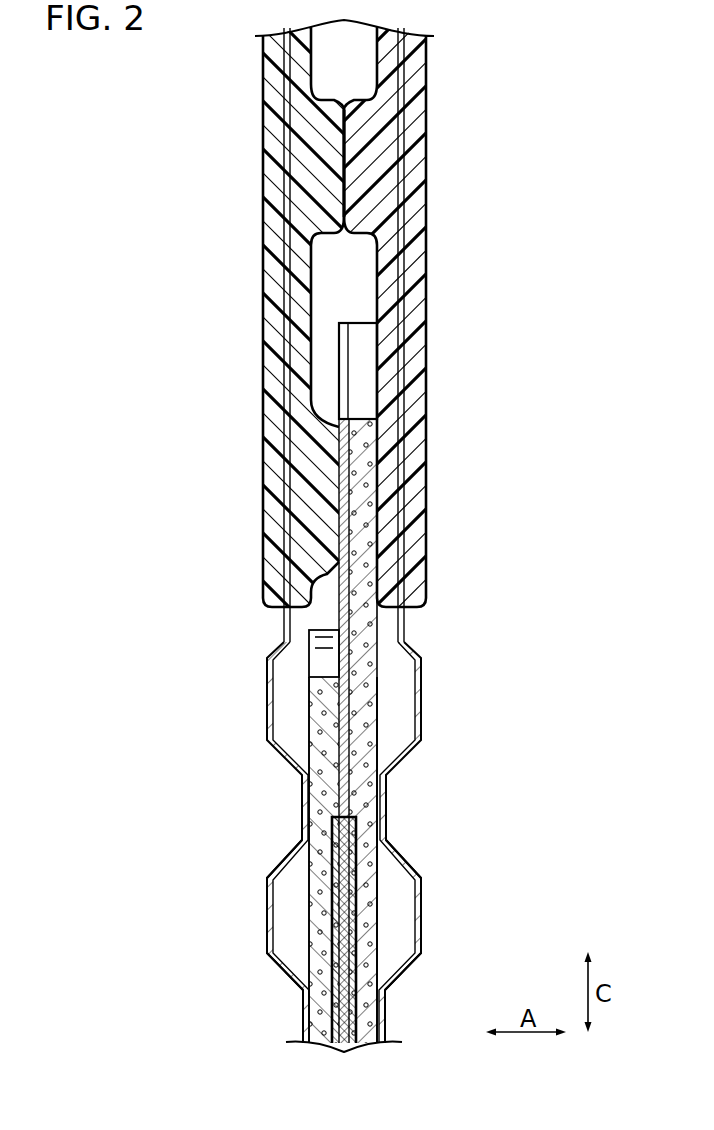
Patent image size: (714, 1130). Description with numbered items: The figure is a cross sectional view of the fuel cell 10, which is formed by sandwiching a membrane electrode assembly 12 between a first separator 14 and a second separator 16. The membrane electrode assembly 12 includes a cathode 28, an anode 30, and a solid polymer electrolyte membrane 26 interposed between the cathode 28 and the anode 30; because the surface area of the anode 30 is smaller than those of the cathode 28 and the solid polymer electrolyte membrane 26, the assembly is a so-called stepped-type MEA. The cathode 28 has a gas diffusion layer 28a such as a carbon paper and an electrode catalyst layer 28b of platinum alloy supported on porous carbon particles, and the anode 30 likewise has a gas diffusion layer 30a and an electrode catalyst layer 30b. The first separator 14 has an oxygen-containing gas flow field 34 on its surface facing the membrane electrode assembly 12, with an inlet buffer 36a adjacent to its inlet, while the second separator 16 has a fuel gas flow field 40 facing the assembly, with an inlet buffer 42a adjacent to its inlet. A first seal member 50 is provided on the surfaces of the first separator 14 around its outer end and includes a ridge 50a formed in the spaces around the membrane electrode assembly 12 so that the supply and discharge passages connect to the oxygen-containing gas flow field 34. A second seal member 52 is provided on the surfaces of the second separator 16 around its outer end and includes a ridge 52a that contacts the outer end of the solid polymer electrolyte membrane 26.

The fuel cell 10 is at (145, 93).
The membrane electrode assembly 12 is at (384, 679).
The first separator 14 is at (430, 179).
The second separator 16 is at (258, 179).
The solid polymer electrolyte membrane 26 is at (338, 456).
The cathode 28 is at (469, 805).
The gas diffusion layer 28a is at (380, 808).
The electrode catalyst layer 28b is at (380, 878).
The anode 30 is at (221, 805).
The gas diffusion layer 30a is at (318, 808).
The electrode catalyst layer 30b is at (318, 878).
The oxygen-containing gas flow field 34 is at (400, 918).
The inlet buffer 36a is at (403, 715).
The fuel gas flow field 40 is at (290, 918).
The inlet buffer 42a is at (287, 715).
The first seal member 50 is at (419, 103).
The ridge 50a is at (362, 182).
The second seal member 52 is at (267, 103).
The ridge 52a is at (322, 503).